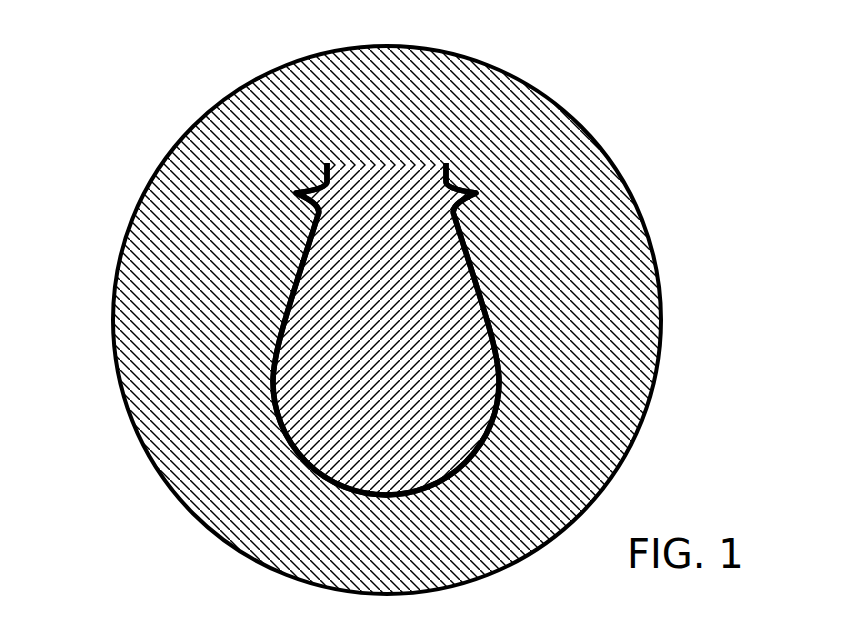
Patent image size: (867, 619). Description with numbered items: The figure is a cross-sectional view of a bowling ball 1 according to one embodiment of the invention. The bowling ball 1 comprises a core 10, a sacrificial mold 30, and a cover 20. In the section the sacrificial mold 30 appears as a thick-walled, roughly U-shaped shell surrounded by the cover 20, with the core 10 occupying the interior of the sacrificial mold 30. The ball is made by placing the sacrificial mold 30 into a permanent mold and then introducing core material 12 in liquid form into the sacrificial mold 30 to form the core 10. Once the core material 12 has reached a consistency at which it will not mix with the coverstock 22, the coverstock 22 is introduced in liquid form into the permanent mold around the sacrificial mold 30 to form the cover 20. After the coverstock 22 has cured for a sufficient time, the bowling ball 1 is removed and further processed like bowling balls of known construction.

The bowling ball 1 is at (414, 312).
The core 10 is at (432, 364).
The core material 12 is at (310, 383).
The cover 20 is at (663, 343).
The coverstock 22 is at (565, 195).
The sacrificial mold 30 is at (497, 347).